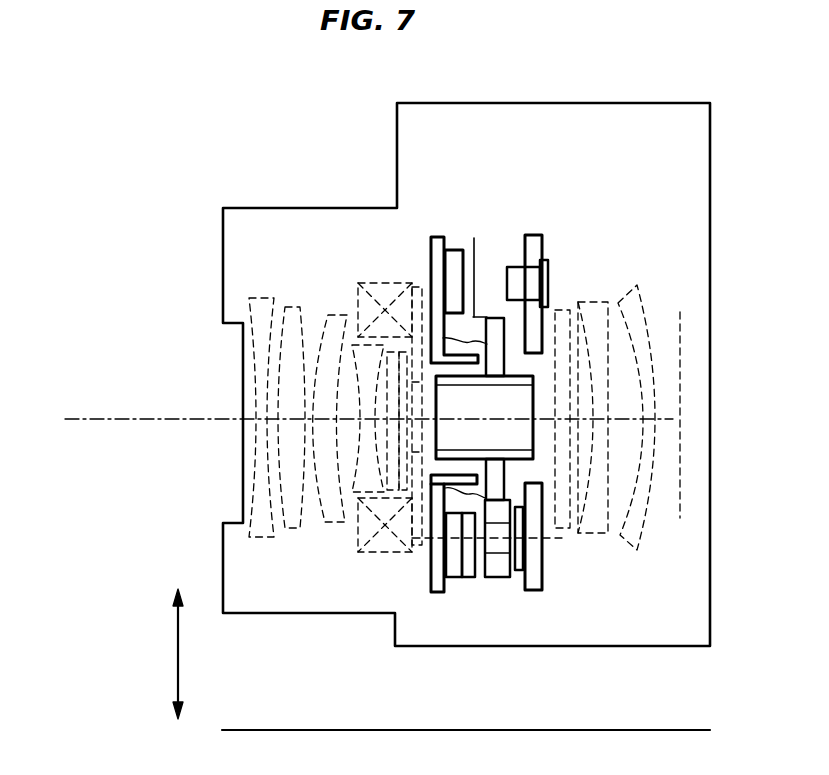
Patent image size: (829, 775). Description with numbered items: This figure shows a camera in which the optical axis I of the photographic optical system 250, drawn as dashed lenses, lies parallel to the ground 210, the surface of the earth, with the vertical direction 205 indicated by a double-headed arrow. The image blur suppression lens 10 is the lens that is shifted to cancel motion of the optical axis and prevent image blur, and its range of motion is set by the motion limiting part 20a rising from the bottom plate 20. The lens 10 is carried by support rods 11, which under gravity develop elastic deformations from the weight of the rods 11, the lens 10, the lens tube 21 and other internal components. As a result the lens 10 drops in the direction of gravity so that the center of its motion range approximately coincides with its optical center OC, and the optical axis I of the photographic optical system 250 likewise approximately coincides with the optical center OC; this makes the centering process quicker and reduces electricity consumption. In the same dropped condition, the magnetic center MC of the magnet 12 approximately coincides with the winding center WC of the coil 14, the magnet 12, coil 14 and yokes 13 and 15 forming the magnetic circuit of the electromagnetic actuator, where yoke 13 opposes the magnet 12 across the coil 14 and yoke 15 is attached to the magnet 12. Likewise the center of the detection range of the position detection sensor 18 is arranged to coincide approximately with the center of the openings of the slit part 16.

The image blur suppression lens 10 is at (455, 397).
The support rods 11 is at (492, 333).
The magnet 12 is at (467, 568).
The yoke 13 is at (520, 570).
The coil 14 is at (498, 578).
The yoke 15 is at (452, 562).
The slit part 16 is at (465, 330).
The position detection sensor 18 is at (473, 238).
The bottom plate 20 is at (453, 263).
The motion limiting part 20a is at (432, 474).
The lens tube 21 is at (538, 250).
The vertical direction 205 is at (177, 642).
The ground 210 is at (667, 730).
The photographic optical system 250 is at (418, 270).
The optical axis I is at (80, 414).
The optical center OC is at (662, 419).
The magnetic center MC is at (435, 538).
The winding center WC is at (543, 540).